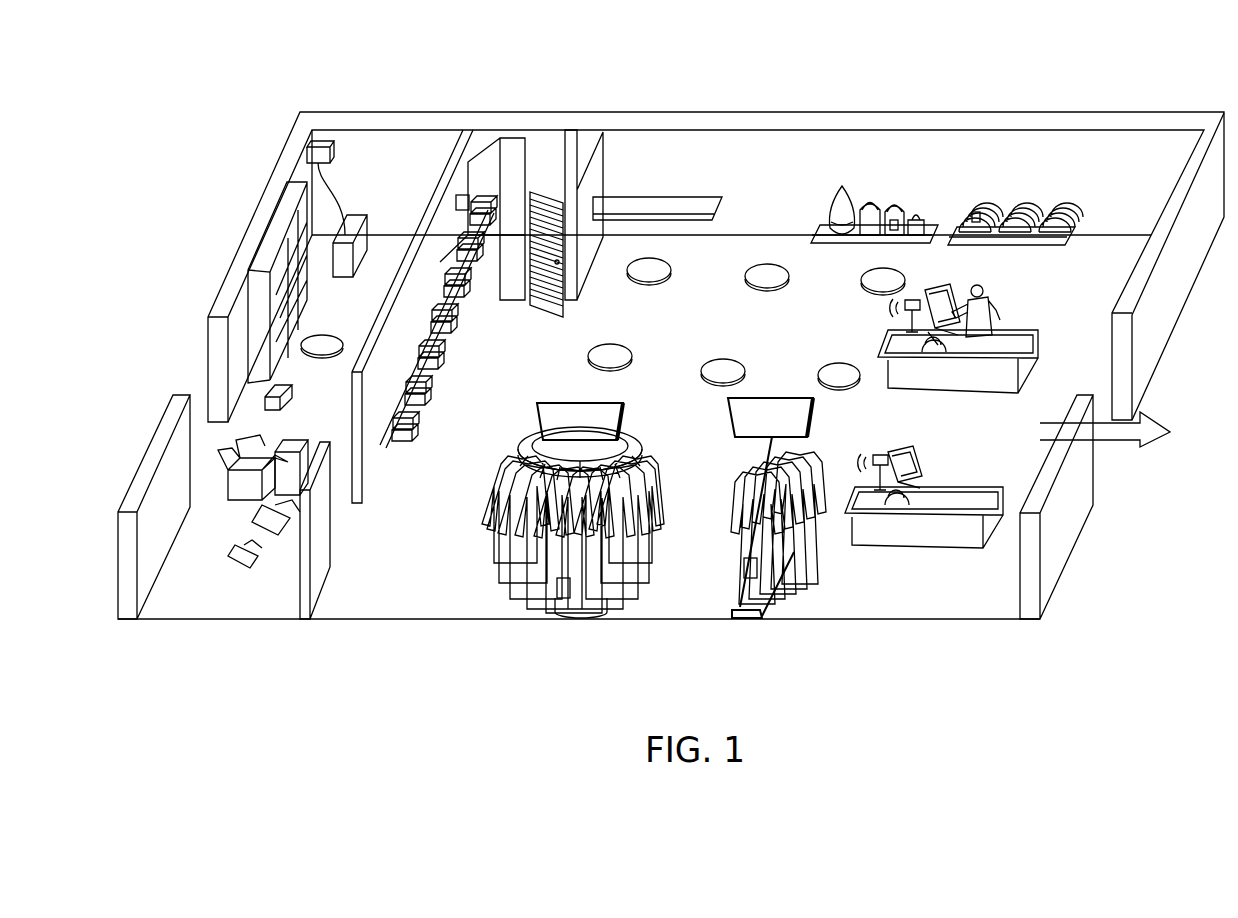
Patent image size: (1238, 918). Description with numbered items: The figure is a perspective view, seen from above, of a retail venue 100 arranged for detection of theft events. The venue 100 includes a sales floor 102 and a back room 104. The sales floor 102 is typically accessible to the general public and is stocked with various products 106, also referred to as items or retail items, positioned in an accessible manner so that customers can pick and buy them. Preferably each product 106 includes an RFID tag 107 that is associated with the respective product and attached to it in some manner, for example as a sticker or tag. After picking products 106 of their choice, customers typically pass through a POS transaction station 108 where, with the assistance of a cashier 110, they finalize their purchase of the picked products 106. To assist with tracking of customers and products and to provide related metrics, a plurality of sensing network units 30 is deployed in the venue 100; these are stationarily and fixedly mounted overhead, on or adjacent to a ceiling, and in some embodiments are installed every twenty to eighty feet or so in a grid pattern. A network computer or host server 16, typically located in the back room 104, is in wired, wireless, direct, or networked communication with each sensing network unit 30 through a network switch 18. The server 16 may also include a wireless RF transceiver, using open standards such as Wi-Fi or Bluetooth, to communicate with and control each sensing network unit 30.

The retail venue 100 is at (184, 78).
The sales floor 102 is at (393, 621).
The back room 104 is at (207, 608).
The products 106 is at (446, 214).
The RFID tag 107 is at (462, 196).
The POS transaction station 108 is at (1028, 300).
The cashier 110 is at (979, 290).
The host server 16 is at (357, 216).
The network switch 18 is at (334, 152).
The sensing network units 30 is at (341, 357).